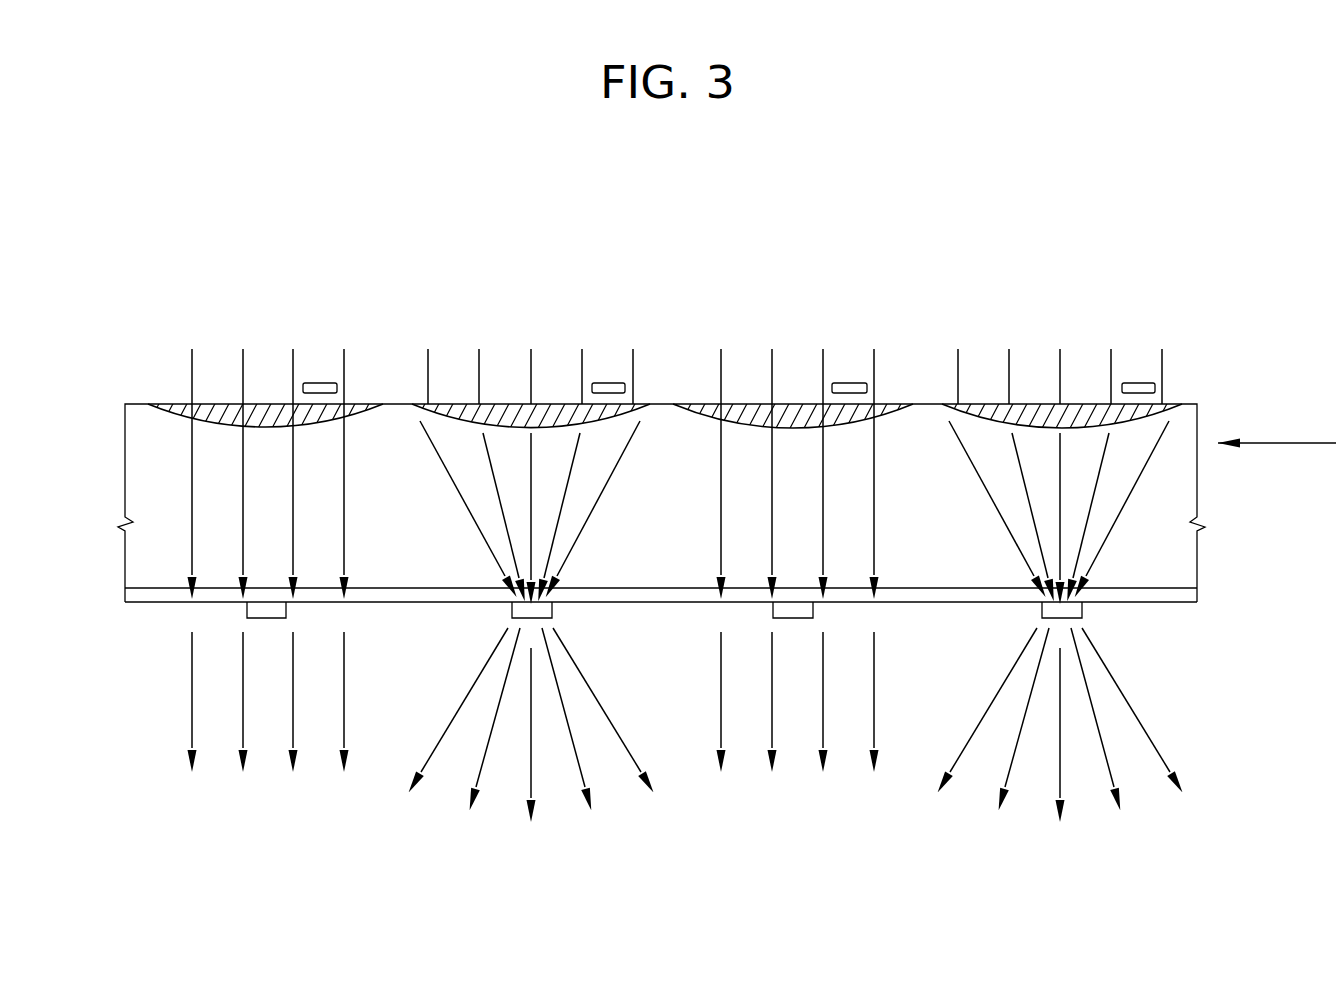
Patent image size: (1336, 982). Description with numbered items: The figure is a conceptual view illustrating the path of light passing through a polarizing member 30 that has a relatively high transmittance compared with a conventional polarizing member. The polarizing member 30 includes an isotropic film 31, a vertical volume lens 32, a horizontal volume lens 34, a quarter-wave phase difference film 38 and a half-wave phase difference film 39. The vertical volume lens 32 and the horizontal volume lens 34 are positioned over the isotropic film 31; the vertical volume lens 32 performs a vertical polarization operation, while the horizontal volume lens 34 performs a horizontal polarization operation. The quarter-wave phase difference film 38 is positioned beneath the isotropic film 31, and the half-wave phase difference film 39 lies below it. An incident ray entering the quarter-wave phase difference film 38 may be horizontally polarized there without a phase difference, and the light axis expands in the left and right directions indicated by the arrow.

The polarizing member 30 is at (618, 216).
The isotropic film 31 is at (133, 485).
The vertical volume lens 32 is at (182, 410).
The horizontal volume lens 34 is at (503, 406).
The λ/4 phase difference film 38 is at (133, 594).
The λ/2 phase difference film 39 is at (247, 611).